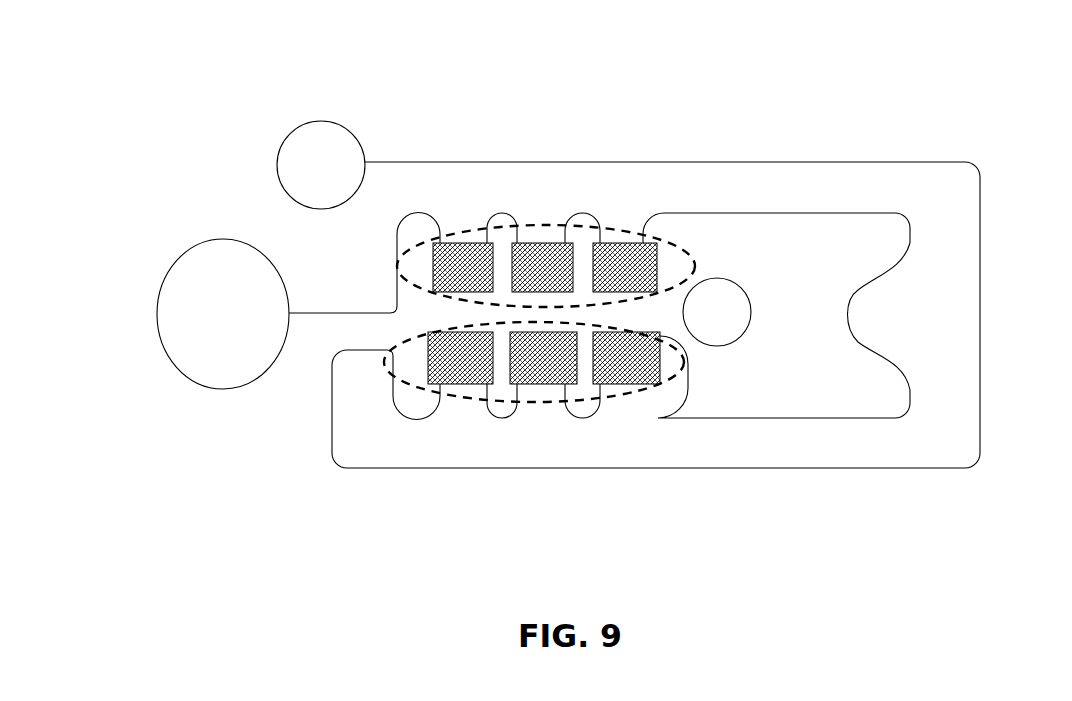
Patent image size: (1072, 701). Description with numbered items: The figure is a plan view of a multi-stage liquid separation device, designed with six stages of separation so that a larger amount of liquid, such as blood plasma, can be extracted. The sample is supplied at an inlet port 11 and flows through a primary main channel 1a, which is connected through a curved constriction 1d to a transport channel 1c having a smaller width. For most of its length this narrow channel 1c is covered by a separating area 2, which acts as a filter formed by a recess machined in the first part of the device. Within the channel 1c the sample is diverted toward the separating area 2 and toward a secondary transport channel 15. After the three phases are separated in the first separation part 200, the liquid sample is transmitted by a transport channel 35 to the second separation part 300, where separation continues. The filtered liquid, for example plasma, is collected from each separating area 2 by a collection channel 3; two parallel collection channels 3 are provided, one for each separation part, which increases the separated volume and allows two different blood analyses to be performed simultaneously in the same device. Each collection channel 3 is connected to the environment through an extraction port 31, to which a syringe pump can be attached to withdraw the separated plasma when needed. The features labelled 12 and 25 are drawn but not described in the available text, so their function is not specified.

The inlet port 11 is at (177, 284).
The second circular terminal portion 12 is at (305, 128).
The primary main channel 1a is at (313, 315).
The transport channel having a smaller width 1c is at (445, 265).
The curved constriction 1d is at (523, 235).
The secondary transport channel 15 is at (490, 222).
The separating area 2 is at (487, 355).
The collection channel 3 is at (648, 302).
The frame body 25 is at (697, 163).
The extraction port 31 is at (750, 228).
The transport channel 35 is at (903, 270).
The first separation part 200 is at (616, 230).
The second separation part 300 is at (622, 398).